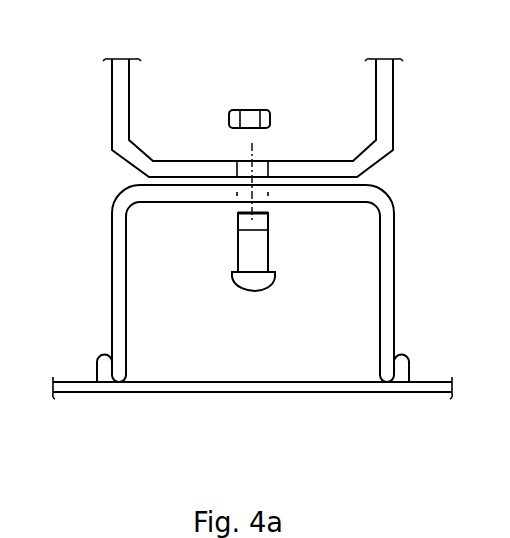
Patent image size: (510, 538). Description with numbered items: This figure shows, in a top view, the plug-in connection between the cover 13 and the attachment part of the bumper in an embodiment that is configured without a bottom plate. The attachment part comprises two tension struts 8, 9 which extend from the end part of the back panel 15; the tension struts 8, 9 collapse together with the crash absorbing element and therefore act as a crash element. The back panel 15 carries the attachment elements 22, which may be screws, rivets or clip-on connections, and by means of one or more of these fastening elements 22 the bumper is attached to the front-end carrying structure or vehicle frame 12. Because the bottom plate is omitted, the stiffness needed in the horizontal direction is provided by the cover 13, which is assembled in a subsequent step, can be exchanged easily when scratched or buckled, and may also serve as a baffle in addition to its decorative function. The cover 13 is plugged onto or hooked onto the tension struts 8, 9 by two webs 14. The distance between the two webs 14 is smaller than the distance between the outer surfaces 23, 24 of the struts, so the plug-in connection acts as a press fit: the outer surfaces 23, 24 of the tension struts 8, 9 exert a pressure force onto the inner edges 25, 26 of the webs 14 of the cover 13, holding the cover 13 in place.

The tension strut 8 is at (120, 298).
The tension strut 9 is at (390, 292).
The vehicle frame 12 is at (118, 105).
The cover 13 is at (370, 392).
The web 14 is at (97, 361).
The back panel 15 is at (300, 193).
The attachment element 22 is at (253, 248).
The outer surface of tension strut 23 is at (112, 323).
The outer surface of tension strut 24 is at (394, 325).
The inner edge of web 25 is at (113, 384).
The inner edge of web 26 is at (397, 377).